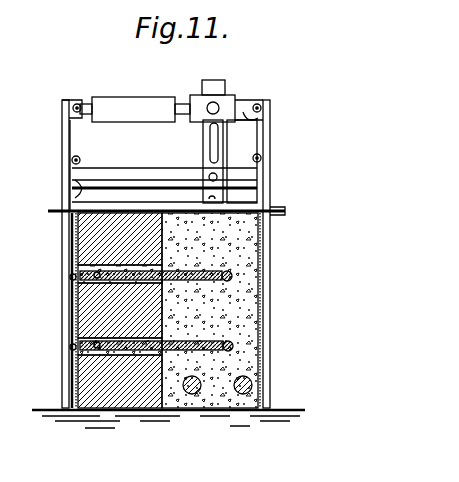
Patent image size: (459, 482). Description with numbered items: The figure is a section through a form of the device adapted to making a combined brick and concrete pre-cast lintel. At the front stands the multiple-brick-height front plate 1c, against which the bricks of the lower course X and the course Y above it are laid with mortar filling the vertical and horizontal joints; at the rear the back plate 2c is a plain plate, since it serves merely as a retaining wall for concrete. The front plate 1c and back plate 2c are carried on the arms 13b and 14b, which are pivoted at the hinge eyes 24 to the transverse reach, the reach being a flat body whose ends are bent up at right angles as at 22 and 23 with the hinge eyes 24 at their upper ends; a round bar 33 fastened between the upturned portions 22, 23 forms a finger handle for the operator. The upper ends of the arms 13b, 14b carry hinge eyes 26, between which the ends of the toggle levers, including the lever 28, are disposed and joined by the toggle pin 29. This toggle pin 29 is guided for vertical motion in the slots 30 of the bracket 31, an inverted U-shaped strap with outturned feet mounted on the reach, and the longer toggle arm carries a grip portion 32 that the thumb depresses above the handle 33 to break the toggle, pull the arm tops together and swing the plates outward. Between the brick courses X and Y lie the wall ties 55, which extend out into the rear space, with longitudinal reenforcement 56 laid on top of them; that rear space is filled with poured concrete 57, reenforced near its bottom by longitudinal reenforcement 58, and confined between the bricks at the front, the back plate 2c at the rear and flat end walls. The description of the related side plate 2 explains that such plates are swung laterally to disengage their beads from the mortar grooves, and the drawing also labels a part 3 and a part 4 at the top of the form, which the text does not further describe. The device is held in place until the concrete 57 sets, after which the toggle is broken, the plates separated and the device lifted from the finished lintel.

The front plate 1c is at (73, 310).
The side plate 2 is at (78, 237).
The back plate 2c is at (267, 332).
The top rail 3 is at (49, 210).
The rail end 4 is at (284, 210).
The arm 13b is at (72, 267).
The arm 14b is at (272, 270).
The upturned end of reach 22 is at (76, 184).
The upturned end of reach 23 is at (268, 183).
The hinge eye 24 is at (72, 158).
The hinge eye 26 is at (76, 104).
The lever 28 is at (262, 118).
The toggle pin 29 is at (216, 106).
The slot 30 is at (209, 141).
The bracket 31 is at (211, 90).
The grip portion 32 is at (122, 105).
The round bar 33 is at (118, 176).
The wall tie 55 is at (222, 279).
The longitudinal reenforcing rod 56 is at (70, 277).
The concrete filling 57 is at (258, 310).
The longitudinal reenforcement 58 is at (192, 394).
The lower course X is at (76, 393).
The course Y is at (72, 345).